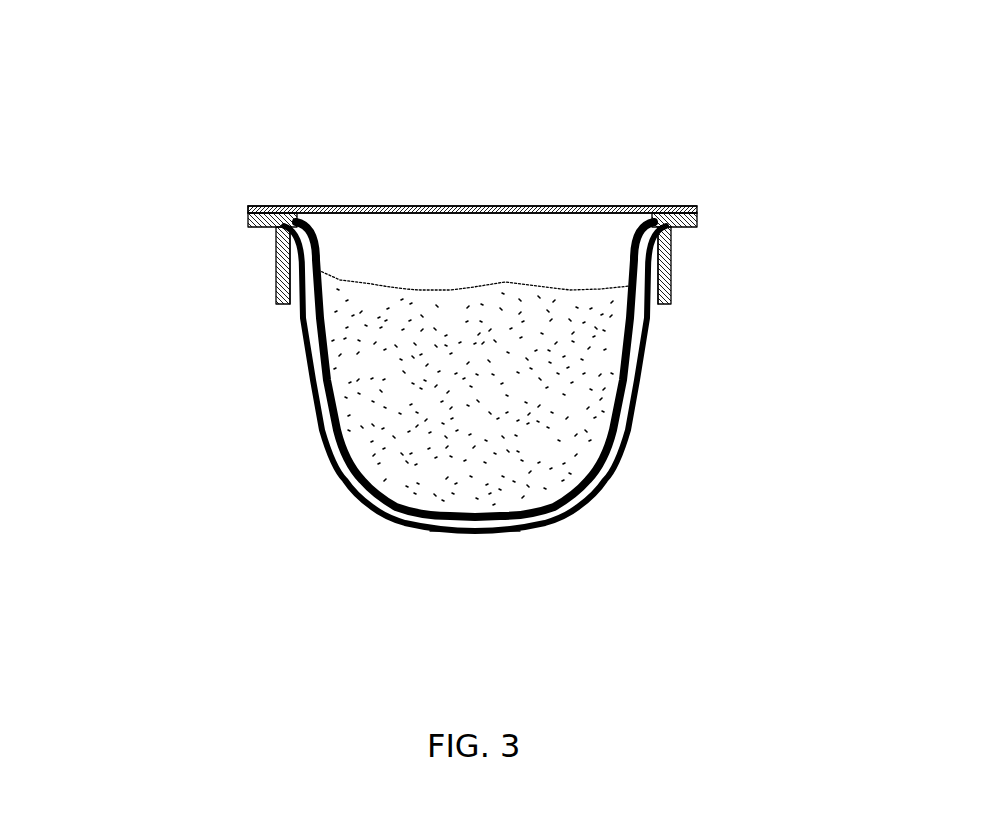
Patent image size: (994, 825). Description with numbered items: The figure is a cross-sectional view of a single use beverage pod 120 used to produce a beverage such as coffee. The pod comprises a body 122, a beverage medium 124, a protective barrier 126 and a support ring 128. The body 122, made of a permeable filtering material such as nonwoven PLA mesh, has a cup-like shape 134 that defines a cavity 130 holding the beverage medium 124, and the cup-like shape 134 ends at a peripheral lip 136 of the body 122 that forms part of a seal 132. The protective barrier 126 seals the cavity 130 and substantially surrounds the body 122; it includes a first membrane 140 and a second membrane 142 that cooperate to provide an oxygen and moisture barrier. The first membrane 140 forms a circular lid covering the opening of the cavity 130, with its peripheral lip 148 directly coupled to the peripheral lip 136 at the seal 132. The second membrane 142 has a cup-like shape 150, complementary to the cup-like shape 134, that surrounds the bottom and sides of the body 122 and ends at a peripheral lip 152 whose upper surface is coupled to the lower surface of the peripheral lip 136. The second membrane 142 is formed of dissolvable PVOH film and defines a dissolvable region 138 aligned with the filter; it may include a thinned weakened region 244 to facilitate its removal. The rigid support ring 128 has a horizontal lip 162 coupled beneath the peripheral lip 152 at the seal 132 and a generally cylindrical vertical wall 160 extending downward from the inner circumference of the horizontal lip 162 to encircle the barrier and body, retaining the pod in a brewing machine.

The single use beverage pod 120 is at (422, 96).
The body 122 is at (412, 396).
The beverage medium 124 is at (493, 384).
The protective barrier 126 is at (150, 136).
The support ring 128 is at (803, 273).
The cavity 130 is at (490, 250).
The seal 132 is at (803, 138).
The cup-like shape 134 is at (577, 495).
The peripheral lip 136 is at (697, 214).
The dissolvable region 138 is at (465, 552).
The first membrane 140 is at (318, 207).
The second membrane 142 is at (411, 378).
The peripheral lip 148 is at (697, 210).
The cup-like shape 150 is at (600, 492).
The peripheral lip 152 is at (697, 218).
The vertical wall 160 is at (667, 247).
The horizontal lip 162 is at (683, 227).
The weakened region 244 is at (670, 264).